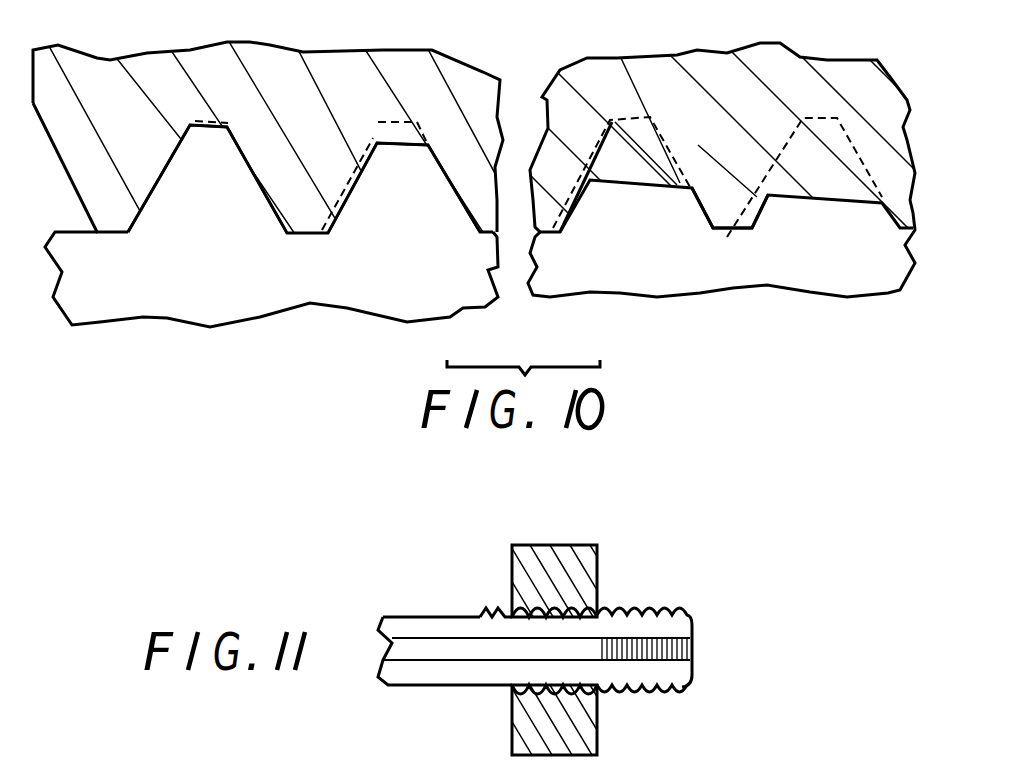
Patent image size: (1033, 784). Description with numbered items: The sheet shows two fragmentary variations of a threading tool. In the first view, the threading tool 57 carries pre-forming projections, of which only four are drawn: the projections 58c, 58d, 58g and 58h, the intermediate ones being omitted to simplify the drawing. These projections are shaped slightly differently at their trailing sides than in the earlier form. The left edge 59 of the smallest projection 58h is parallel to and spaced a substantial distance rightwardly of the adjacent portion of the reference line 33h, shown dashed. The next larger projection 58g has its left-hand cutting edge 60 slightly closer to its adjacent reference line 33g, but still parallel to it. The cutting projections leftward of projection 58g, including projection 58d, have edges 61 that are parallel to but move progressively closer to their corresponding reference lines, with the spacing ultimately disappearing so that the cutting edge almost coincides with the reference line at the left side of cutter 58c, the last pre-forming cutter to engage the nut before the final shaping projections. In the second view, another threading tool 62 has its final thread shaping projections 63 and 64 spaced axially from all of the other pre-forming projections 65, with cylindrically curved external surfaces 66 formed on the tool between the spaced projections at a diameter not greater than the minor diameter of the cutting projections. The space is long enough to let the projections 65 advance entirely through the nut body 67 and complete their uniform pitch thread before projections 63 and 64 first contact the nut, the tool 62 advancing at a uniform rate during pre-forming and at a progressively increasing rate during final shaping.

In FIG. 10, the threading tool 57 is at (95, 302).
In FIG. 10, the pre-forming cutter 58c is at (197, 193).
In FIG. 10, the pre-forming projection 58d is at (393, 207).
In FIG. 10, the cutting edges 61 is at (180, 132).
In FIG. 10, the reference line 33g is at (607, 123).
In FIG. 10, the reference line 33h is at (795, 128).
In FIG. 10, the pre-forming projection 58g is at (642, 200).
In FIG. 10, the pre-forming projection 58h is at (837, 213).
In FIG. 10, the left edge 59 is at (758, 207).
In FIG. 10, the cutting edge 60 is at (583, 213).
In FIG. 11, the threading tool 62 is at (422, 677).
In FIG. 11, the final thread shaping projection 63 is at (480, 617).
In FIG. 11, the final thread shaping projection 64 is at (500, 612).
In FIG. 11, the pre-forming projections 65 is at (638, 610).
In FIG. 11, the cylindrically curved external surfaces 66 is at (557, 610).
In FIG. 11, the nut body 67 is at (537, 553).